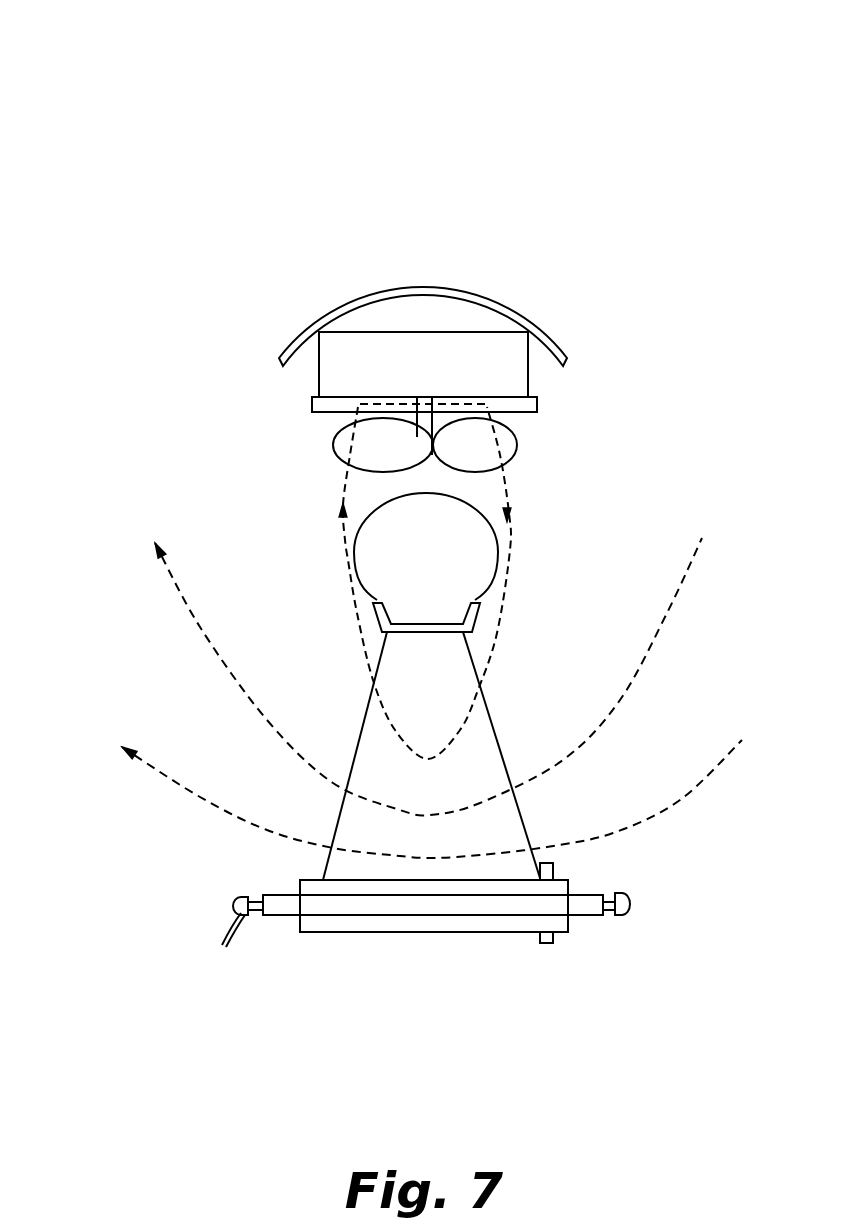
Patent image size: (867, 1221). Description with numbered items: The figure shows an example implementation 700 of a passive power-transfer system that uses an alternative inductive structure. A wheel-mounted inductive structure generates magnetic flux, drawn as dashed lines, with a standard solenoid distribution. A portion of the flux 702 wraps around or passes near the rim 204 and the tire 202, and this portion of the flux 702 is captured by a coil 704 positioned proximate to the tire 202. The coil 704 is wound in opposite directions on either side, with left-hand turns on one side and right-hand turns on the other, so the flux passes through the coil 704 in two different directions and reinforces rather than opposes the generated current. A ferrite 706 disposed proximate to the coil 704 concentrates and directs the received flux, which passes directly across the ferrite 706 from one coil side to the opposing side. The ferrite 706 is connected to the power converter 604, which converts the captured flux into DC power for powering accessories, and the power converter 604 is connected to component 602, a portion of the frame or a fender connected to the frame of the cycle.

The example implementation of a passive power-transfer system 700 is at (135, 72).
The component 602 is at (362, 297).
The power converter 604 is at (318, 363).
The ferrite 706 is at (312, 403).
The coil 704 is at (333, 447).
The portion of the flux 702 is at (347, 560).
The tire 202 is at (357, 570).
The rim 204 is at (377, 617).